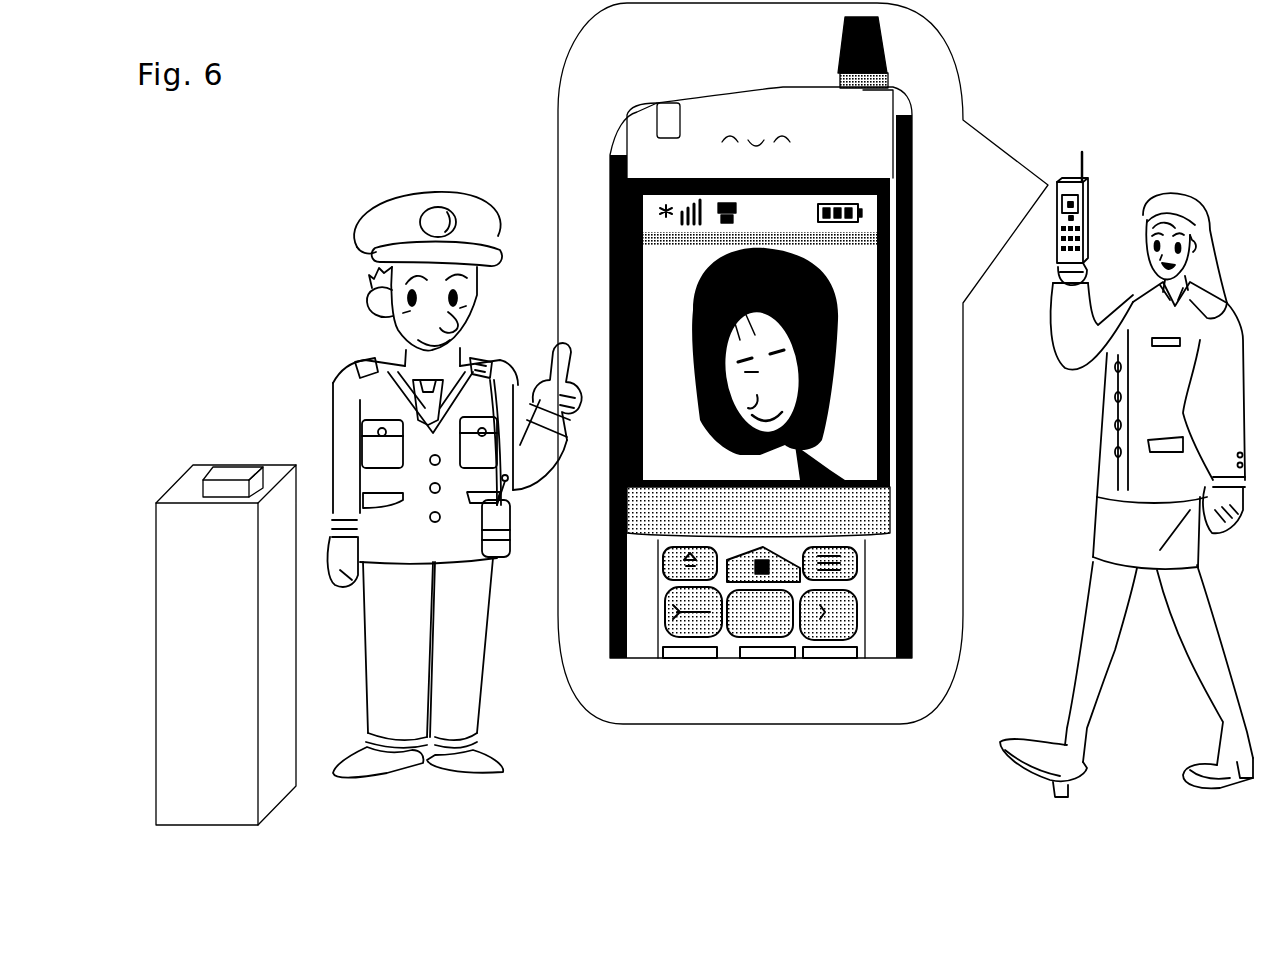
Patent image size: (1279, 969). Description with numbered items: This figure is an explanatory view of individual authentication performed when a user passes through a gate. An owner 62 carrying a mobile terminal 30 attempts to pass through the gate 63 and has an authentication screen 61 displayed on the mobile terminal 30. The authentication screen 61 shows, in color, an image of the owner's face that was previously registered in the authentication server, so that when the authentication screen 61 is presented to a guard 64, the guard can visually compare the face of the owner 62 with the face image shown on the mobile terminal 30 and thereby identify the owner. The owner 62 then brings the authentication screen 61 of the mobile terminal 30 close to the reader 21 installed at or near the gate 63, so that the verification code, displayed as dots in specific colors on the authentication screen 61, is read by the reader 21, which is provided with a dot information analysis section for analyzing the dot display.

The reader 21 is at (233, 480).
The mobile terminal 30 is at (840, 115).
The authentication screen 61 is at (828, 362).
The owner 62 is at (1195, 310).
The gate 63 is at (282, 710).
The guard 64 is at (473, 692).